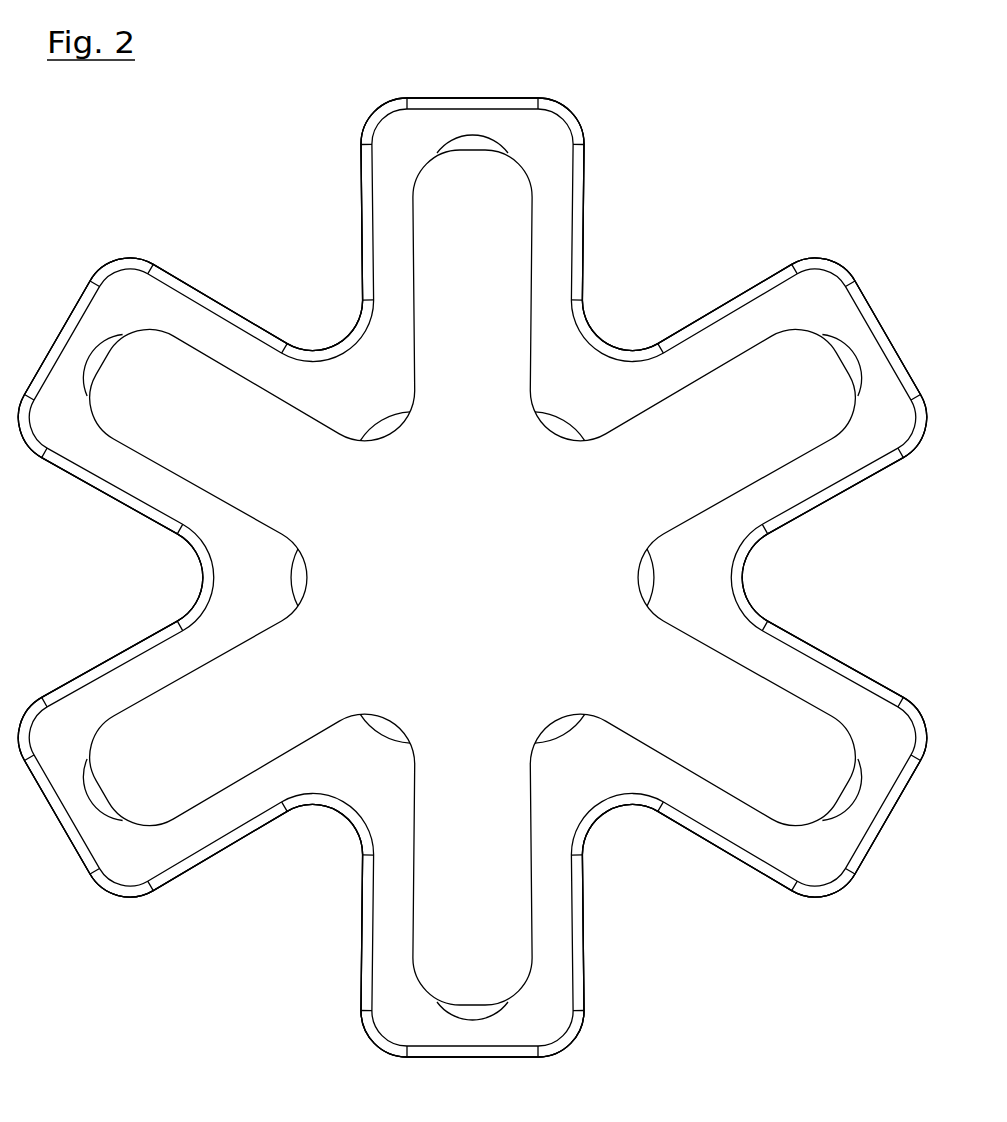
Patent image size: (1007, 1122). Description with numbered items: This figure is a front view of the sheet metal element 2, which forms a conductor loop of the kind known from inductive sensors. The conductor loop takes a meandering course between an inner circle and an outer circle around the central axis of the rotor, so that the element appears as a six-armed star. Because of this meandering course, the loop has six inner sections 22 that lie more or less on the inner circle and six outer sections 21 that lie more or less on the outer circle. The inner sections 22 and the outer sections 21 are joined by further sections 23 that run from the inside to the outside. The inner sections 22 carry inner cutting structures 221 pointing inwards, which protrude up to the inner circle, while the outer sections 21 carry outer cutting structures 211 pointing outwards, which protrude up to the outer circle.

The sheet metal element 2 is at (282, 108).
The outer sections 21 is at (75, 353).
The outer cutting structures 211 is at (55, 345).
The inner sections 22 is at (352, 763).
The inner cutting structures 221 is at (385, 730).
The further sections 23 is at (392, 243).